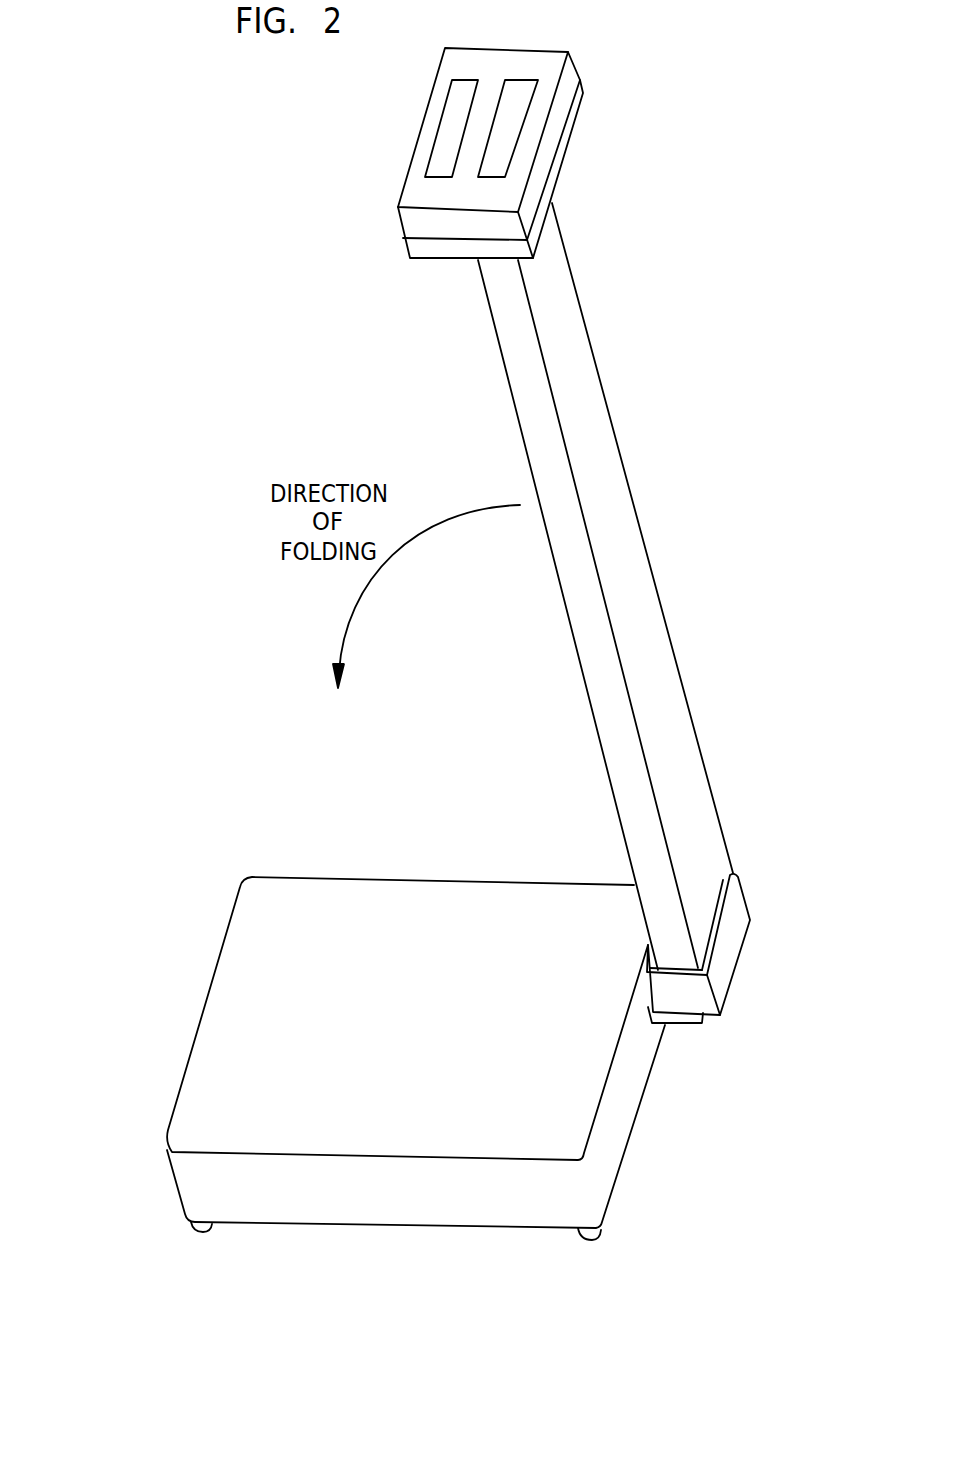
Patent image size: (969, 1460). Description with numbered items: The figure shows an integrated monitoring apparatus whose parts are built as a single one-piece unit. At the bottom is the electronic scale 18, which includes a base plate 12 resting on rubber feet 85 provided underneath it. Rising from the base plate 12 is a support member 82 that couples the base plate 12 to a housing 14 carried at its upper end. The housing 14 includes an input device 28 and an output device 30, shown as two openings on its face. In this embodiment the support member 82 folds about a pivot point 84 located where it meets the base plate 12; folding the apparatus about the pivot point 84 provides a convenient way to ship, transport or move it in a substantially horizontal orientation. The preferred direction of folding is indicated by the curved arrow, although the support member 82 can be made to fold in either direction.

The base plate 12 is at (170, 1168).
The housing 14 is at (528, 50).
The electronic scale 18 is at (316, 848).
The input device 28 is at (455, 108).
The output device 30 is at (522, 103).
The support member 82 is at (605, 408).
The pivot point 84 is at (683, 1025).
The rubber feet 85 is at (190, 1232).